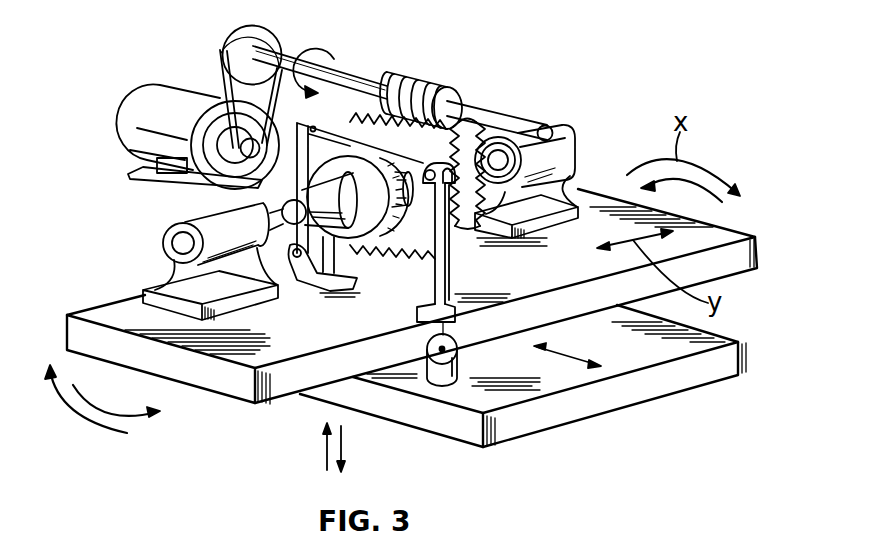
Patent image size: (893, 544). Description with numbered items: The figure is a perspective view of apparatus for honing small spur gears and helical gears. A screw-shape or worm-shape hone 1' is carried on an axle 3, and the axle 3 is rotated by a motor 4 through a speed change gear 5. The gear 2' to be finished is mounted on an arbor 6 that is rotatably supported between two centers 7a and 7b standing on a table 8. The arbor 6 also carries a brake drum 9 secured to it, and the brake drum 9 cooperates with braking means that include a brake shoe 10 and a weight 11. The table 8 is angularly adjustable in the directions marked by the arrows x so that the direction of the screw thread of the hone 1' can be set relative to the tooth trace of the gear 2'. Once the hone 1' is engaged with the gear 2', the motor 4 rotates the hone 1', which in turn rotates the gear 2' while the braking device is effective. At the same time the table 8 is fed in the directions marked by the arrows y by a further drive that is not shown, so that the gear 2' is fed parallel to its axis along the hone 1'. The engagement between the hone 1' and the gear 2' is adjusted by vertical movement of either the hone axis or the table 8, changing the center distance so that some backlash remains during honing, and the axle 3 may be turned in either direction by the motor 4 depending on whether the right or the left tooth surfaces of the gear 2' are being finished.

The screw-shape or worm-shape hone 1' is at (421, 80).
The gear 2' is at (472, 201).
The axle 3 is at (350, 68).
The motor 4 is at (135, 102).
The speed change gear 5 is at (222, 74).
The arbor 6 is at (306, 190).
The center 7a is at (282, 240).
The center 7b is at (480, 147).
The table 8 is at (728, 234).
The brake drum 9 is at (350, 220).
The brake shoe 10 is at (296, 150).
The weight 11 is at (438, 376).